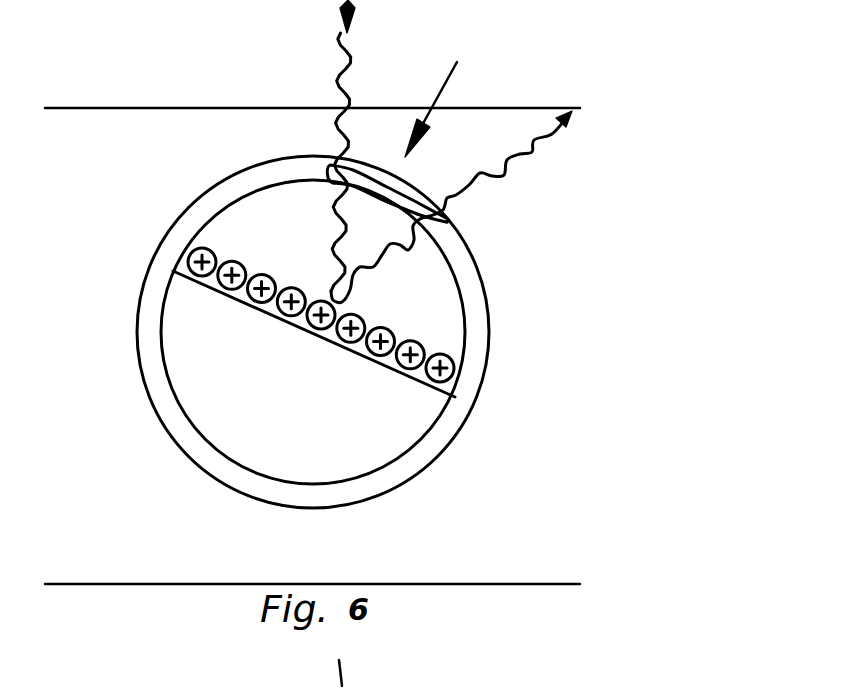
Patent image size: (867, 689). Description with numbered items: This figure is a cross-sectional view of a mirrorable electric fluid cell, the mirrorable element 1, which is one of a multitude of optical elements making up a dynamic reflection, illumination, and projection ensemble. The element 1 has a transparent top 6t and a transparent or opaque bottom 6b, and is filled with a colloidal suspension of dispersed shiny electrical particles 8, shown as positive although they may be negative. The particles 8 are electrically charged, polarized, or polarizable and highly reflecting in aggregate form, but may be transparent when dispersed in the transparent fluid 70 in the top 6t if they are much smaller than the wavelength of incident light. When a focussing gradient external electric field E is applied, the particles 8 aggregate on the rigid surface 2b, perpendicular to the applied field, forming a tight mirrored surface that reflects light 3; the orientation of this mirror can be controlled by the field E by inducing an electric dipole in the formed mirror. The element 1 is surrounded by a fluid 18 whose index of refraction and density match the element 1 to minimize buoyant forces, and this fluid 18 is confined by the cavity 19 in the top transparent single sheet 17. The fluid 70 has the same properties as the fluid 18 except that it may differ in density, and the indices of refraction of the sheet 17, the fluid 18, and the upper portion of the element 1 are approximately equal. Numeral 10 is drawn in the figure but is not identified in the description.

The top transparent single sheet 17 is at (125, 157).
The cavity 19 is at (483, 387).
The fluid 18 is at (477, 322).
The transparent fluid 70 is at (410, 280).
The light 3 is at (330, 65).
The electric field E is at (459, 97).
The transparent top 6t is at (272, 210).
The mirrorable element 1 is at (306, 428).
The rigid surface 2b is at (262, 313).
The shiny electrical particles 8 is at (303, 294).
The bottom 6b is at (220, 392).
The cell 10 is at (146, 500).